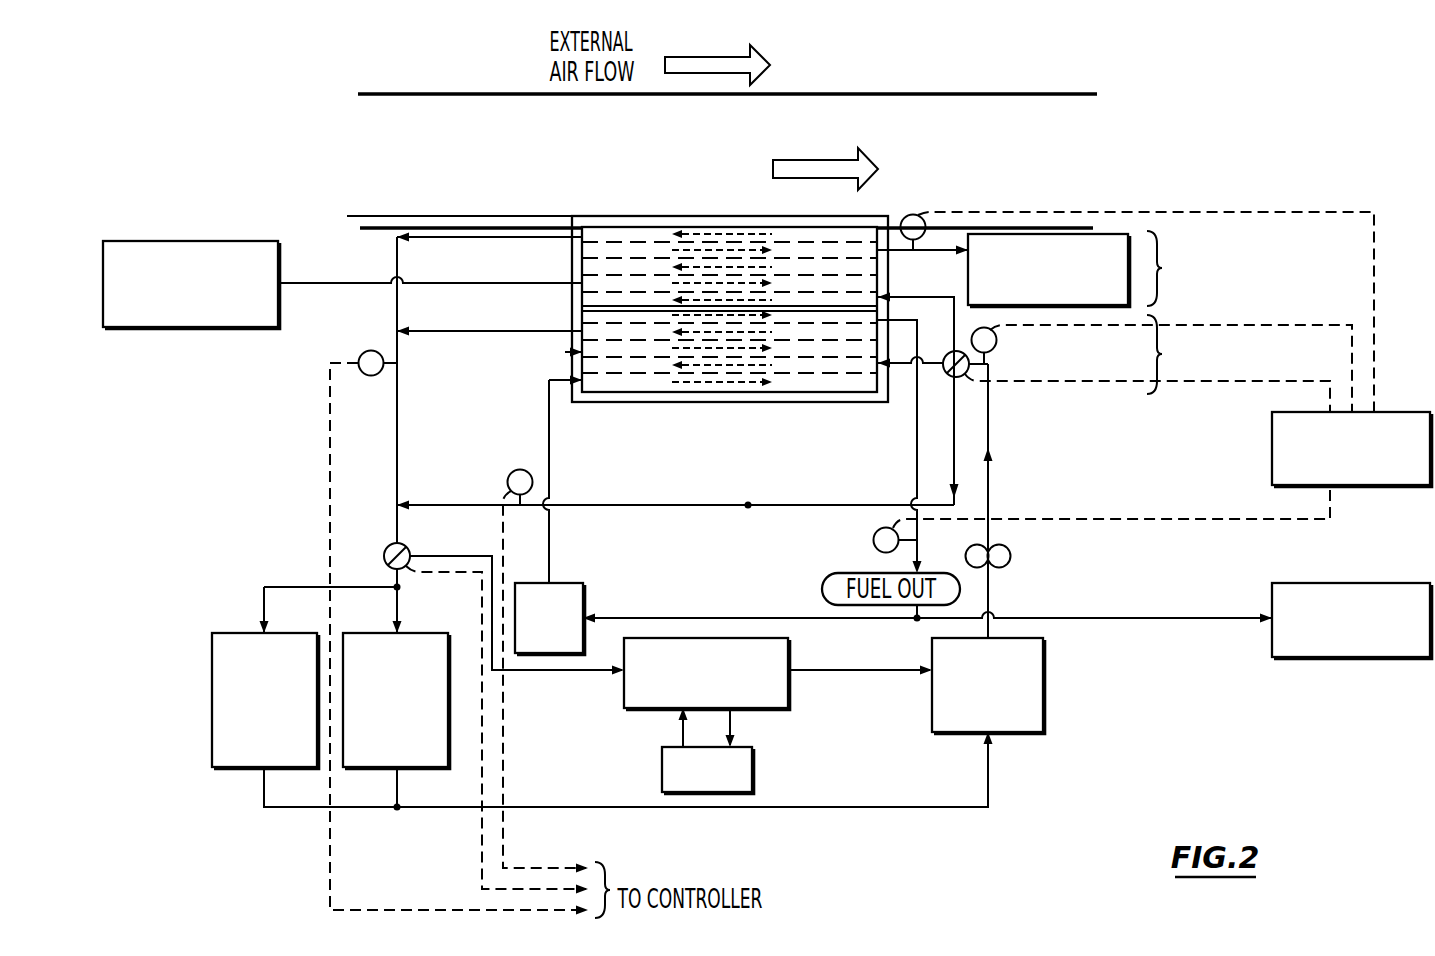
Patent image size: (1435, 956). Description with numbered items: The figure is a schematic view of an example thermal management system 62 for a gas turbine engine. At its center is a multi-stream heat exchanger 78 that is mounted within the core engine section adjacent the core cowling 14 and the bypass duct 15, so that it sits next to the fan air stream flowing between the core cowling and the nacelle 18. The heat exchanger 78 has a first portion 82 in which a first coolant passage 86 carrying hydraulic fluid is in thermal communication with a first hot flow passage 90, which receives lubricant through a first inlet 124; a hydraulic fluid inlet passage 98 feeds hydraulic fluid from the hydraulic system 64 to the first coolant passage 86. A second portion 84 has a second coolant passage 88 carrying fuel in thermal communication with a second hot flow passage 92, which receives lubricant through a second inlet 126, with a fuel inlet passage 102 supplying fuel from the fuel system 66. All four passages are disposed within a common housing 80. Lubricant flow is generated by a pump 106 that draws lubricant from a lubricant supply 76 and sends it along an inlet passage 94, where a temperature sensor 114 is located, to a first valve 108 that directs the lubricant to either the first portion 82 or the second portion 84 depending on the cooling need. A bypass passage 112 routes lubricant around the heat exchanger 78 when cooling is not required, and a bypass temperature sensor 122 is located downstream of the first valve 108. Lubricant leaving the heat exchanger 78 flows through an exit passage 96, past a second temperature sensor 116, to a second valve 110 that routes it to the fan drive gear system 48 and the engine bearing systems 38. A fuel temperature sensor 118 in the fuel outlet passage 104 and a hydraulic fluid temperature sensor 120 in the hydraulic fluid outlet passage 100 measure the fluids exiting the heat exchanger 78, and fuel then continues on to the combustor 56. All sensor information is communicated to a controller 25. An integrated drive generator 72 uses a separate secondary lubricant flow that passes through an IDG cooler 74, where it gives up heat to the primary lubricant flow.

The core cowling 14 is at (473, 226).
The bypass duct 15 is at (670, 138).
The nacelle 18 is at (1065, 95).
The controller 25 is at (1340, 485).
The engine bearing systems 38 is at (382, 677).
The fan drive gear system 48 is at (250, 677).
The combustor 56 is at (1337, 625).
The thermal management system 62 is at (1205, 195).
The hydraulic system 64 is at (176, 279).
The fuel system 66 is at (539, 646).
The integrated drive generator 72 is at (753, 772).
The IDG cooler 74 is at (790, 692).
The lubricant supply 76 is at (1045, 673).
The multi-stream heat exchanger 78 is at (568, 352).
The common housing 80 is at (710, 400).
The first portion 82 is at (1078, 269).
The second portion 84 is at (1167, 354).
The first coolant passage 86 is at (618, 250).
The second coolant passage 88 is at (695, 315).
The first hot flow passage 90 is at (845, 272).
The second hot flow passage 92 is at (842, 362).
The inlet passage 94 is at (990, 475).
The exit passage 96 is at (397, 433).
The hydraulic fluid inlet passage 98 is at (358, 283).
The hydraulic fluid outlet passage 100 is at (940, 250).
The fuel inlet passage 102 is at (552, 552).
The fuel outlet passage 104 is at (915, 470).
The pump 106 is at (1012, 560).
The first valve 108 is at (965, 377).
The second valve 110 is at (409, 548).
The bypass passage 112 is at (748, 508).
The temperature sensor 114 is at (997, 348).
The second temperature sensor 116 is at (370, 350).
The fuel temperature sensor 118 is at (873, 547).
The hydraulic fluid temperature sensor 120 is at (908, 215).
The bypass temperature sensor 122 is at (522, 469).
The first inlet 124 is at (888, 297).
The second inlet 126 is at (893, 366).